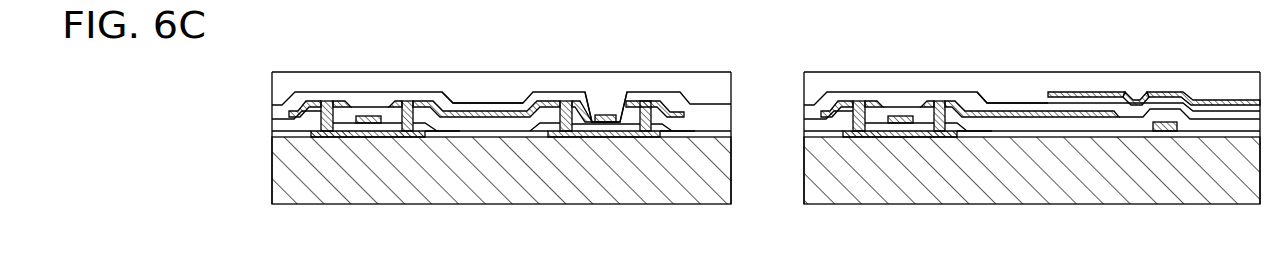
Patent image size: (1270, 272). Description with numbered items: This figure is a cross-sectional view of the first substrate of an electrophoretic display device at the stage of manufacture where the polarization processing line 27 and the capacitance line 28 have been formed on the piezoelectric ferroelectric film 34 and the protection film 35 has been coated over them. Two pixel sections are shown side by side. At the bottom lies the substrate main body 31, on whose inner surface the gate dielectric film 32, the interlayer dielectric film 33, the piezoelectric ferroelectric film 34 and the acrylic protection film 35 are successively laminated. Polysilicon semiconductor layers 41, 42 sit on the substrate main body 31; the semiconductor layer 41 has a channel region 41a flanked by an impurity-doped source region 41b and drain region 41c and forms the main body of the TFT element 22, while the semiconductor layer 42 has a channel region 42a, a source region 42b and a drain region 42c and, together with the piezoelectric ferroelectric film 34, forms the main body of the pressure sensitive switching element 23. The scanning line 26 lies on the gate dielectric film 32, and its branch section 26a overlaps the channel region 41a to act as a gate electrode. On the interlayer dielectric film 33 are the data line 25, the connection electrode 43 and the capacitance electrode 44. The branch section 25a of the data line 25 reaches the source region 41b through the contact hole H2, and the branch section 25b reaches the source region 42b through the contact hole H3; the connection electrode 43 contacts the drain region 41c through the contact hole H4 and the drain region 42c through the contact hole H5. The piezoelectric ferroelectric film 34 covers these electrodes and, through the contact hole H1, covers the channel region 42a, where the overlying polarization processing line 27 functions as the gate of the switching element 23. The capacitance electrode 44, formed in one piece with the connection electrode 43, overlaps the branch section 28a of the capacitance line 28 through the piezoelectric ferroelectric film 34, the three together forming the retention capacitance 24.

The substrate main body 31 is at (282, 172).
The gate dielectric film 32 is at (280, 138).
The interlayer dielectric film 33 is at (282, 126).
The piezoelectric ferroelectric film 34 is at (282, 112).
The protection film 35 is at (293, 91).
The semiconductor layer 41 is at (629, 201).
The channel region 41a is at (373, 138).
The source region 41b is at (322, 138).
The drain region 41c is at (413, 138).
The semiconductor layer 42 is at (599, 201).
The channel region 42a is at (606, 138).
The source region 42b is at (648, 138).
The drain region 42c is at (557, 138).
The TFT element 22 is at (437, 138).
The switching element 23 is at (672, 138).
The retention capacitance 24 is at (1134, 100).
The data line 25 is at (291, 110).
The branch section 25a is at (316, 101).
The branch section 25b is at (637, 101).
The scanning line 26 is at (1166, 122).
The branch section 26a is at (369, 116).
The polarization processing line 27 is at (606, 115).
The capacitance line 28 is at (1215, 100).
The branch section 28a is at (1076, 92).
The connection electrode 43 is at (489, 92).
The capacitance electrode 44 is at (1018, 111).
The contact hole H1 is at (589, 92).
The contact hole H2 is at (328, 101).
The contact hole H3 is at (651, 103).
The contact hole H4 is at (408, 101).
The contact hole H5 is at (565, 101).